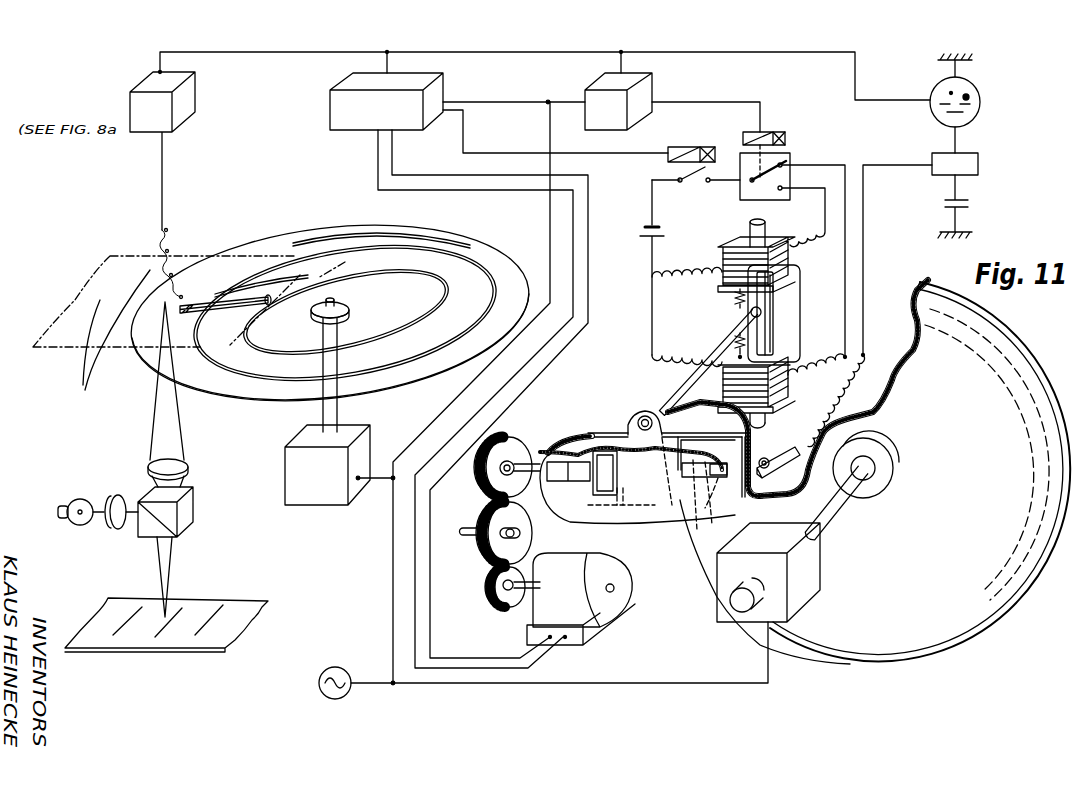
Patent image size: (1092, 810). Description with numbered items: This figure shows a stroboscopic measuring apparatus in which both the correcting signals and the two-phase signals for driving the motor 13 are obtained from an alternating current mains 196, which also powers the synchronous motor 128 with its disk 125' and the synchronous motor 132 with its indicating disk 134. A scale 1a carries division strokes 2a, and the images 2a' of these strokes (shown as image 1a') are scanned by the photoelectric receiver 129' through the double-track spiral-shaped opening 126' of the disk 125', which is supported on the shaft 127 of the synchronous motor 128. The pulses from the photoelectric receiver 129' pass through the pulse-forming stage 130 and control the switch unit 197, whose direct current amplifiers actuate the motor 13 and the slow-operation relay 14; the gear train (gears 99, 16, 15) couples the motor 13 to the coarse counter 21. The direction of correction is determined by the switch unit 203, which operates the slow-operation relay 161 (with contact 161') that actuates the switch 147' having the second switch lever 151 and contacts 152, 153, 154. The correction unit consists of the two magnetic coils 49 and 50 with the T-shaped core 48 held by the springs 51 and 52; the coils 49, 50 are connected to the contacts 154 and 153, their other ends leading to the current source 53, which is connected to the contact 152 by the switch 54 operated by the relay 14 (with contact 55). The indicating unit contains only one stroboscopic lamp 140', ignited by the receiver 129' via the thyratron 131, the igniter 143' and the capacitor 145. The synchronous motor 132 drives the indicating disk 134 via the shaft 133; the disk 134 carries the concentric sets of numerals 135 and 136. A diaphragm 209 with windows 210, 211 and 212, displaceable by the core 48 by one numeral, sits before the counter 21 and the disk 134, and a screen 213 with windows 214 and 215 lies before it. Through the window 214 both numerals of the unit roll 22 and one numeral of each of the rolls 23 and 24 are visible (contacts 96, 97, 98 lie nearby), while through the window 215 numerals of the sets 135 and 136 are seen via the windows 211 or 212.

The pulse-forming stage 130 is at (130, 105).
The switch unit 197 is at (332, 108).
The switch unit 203 is at (592, 80).
The slow-operation relay 14 is at (682, 148).
The relay contact 55 is at (707, 147).
The slow-operation relay 161 is at (751, 125).
The relay contact 161' is at (782, 125).
The second switch lever 151 is at (775, 165).
The contact 152 is at (750, 182).
The contact 153 is at (785, 168).
The contact 154 is at (783, 192).
The switch 147' is at (729, 207).
The switch 54 is at (690, 186).
The current source 53 is at (646, 226).
The thyratron 131 is at (980, 113).
The igniter 143' is at (947, 255).
The capacitor 145 is at (970, 205).
The magnetic coil 50 is at (723, 258).
The T-shaped core 48 is at (780, 325).
The magnetic coil 49 is at (785, 395).
The spring 52 is at (738, 300).
The spring 51 is at (748, 320).
The unit roll 22 is at (635, 433).
The roll 23 is at (612, 433).
The roll 24 is at (580, 440).
The diaphragm 209 is at (680, 405).
The window 215 is at (690, 470).
The window 210 is at (646, 500).
The screen 213 is at (560, 512).
The window 214 is at (600, 500).
The coarse counter 21 is at (664, 508).
The window 211 is at (690, 540).
The window 212 is at (746, 498).
The contact 96 is at (704, 411).
The contact 97 is at (704, 419).
The contact 98 is at (704, 427).
The stroboscopic lamp 140' is at (778, 449).
The gear 99 is at (515, 455).
The gear 16 is at (490, 548).
The gear 15 is at (498, 600).
The motor 13 is at (610, 612).
The synchronous motor 128 is at (325, 502).
The shaft 127 is at (340, 405).
The alternating current mains 196 is at (336, 667).
The disk 125' is at (330, 322).
The spiral-shaped opening 126' is at (344, 294).
The photoelectric receiver 129' is at (210, 338).
The image outline 1a' is at (164, 282).
The images of the division strokes 2a' is at (110, 337).
The division strokes 2a is at (144, 548).
The scale 1a is at (167, 608).
The indicating disk 134 is at (1000, 625).
The first set of numerals 135 is at (925, 620).
The second set of numerals 136 is at (890, 600).
The synchronous motor 132 is at (822, 572).
The shaft 133 is at (840, 505).